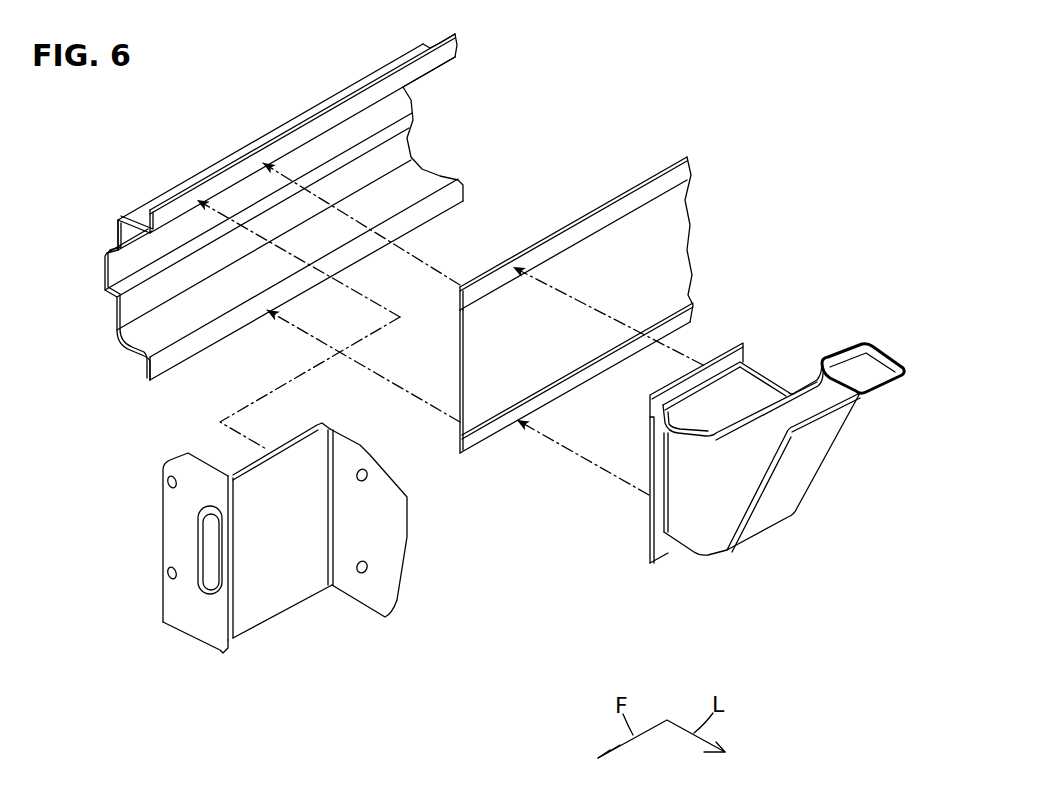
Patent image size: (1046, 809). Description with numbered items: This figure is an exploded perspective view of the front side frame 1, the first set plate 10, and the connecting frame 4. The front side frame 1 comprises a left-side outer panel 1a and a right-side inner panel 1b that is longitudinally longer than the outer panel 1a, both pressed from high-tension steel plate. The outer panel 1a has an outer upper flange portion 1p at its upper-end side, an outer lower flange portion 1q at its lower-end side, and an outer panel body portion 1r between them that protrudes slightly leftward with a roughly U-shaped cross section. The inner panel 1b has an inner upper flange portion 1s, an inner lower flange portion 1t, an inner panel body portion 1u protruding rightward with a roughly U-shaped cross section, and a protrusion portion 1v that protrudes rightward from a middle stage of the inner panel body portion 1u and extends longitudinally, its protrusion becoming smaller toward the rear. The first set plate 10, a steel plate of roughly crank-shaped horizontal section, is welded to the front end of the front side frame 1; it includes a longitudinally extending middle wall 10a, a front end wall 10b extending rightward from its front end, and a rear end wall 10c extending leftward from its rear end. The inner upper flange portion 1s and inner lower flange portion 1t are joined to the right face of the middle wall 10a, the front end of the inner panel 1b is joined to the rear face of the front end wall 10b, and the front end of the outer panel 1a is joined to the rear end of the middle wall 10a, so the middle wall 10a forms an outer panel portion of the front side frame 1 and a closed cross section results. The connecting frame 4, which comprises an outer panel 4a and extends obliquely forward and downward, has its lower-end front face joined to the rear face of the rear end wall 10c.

The front side frame 1 is at (573, 100).
The outer panel 1a is at (505, 198).
The inner panel 1b is at (465, 112).
The outer upper flange portion 1p is at (640, 198).
The outer lower flange portion 1q is at (667, 332).
The outer panel body portion 1r is at (657, 264).
The inner upper flange portion 1s is at (360, 103).
The inner lower flange portion 1t is at (150, 377).
The inner panel body portion 1u is at (118, 219).
The protrusion portion 1v is at (105, 270).
The connecting frame 4 is at (831, 475).
The outer panel 4a is at (785, 511).
The first set plate 10 is at (254, 630).
The middle wall 10a is at (296, 608).
The front end wall 10b is at (190, 453).
The rear end wall 10c is at (362, 605).